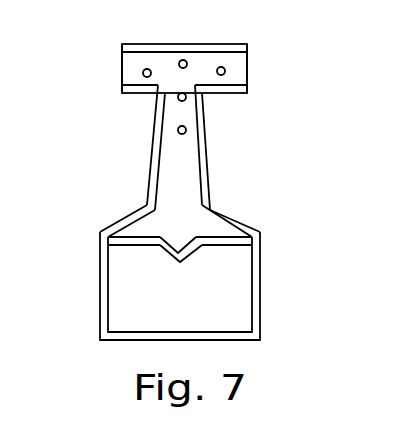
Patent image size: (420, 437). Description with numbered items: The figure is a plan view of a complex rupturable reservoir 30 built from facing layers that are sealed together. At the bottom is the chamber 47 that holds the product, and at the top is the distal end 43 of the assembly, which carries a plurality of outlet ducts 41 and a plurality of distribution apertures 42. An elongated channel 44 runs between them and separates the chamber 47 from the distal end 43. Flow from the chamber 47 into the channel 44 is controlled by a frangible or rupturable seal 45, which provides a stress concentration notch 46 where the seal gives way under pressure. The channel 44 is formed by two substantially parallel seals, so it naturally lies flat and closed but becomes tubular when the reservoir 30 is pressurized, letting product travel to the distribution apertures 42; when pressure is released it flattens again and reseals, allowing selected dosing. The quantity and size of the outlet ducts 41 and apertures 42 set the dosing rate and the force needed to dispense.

The reservoir 30 is at (192, 178).
The outlet ducts 41 is at (122, 68).
The distribution apertures 42 is at (187, 62).
The distal end 43 is at (183, 43).
The elongated channel 44 is at (182, 160).
The frangible seal 45 is at (226, 236).
The stress concentration notch 46 is at (172, 242).
The chamber 47 is at (127, 304).